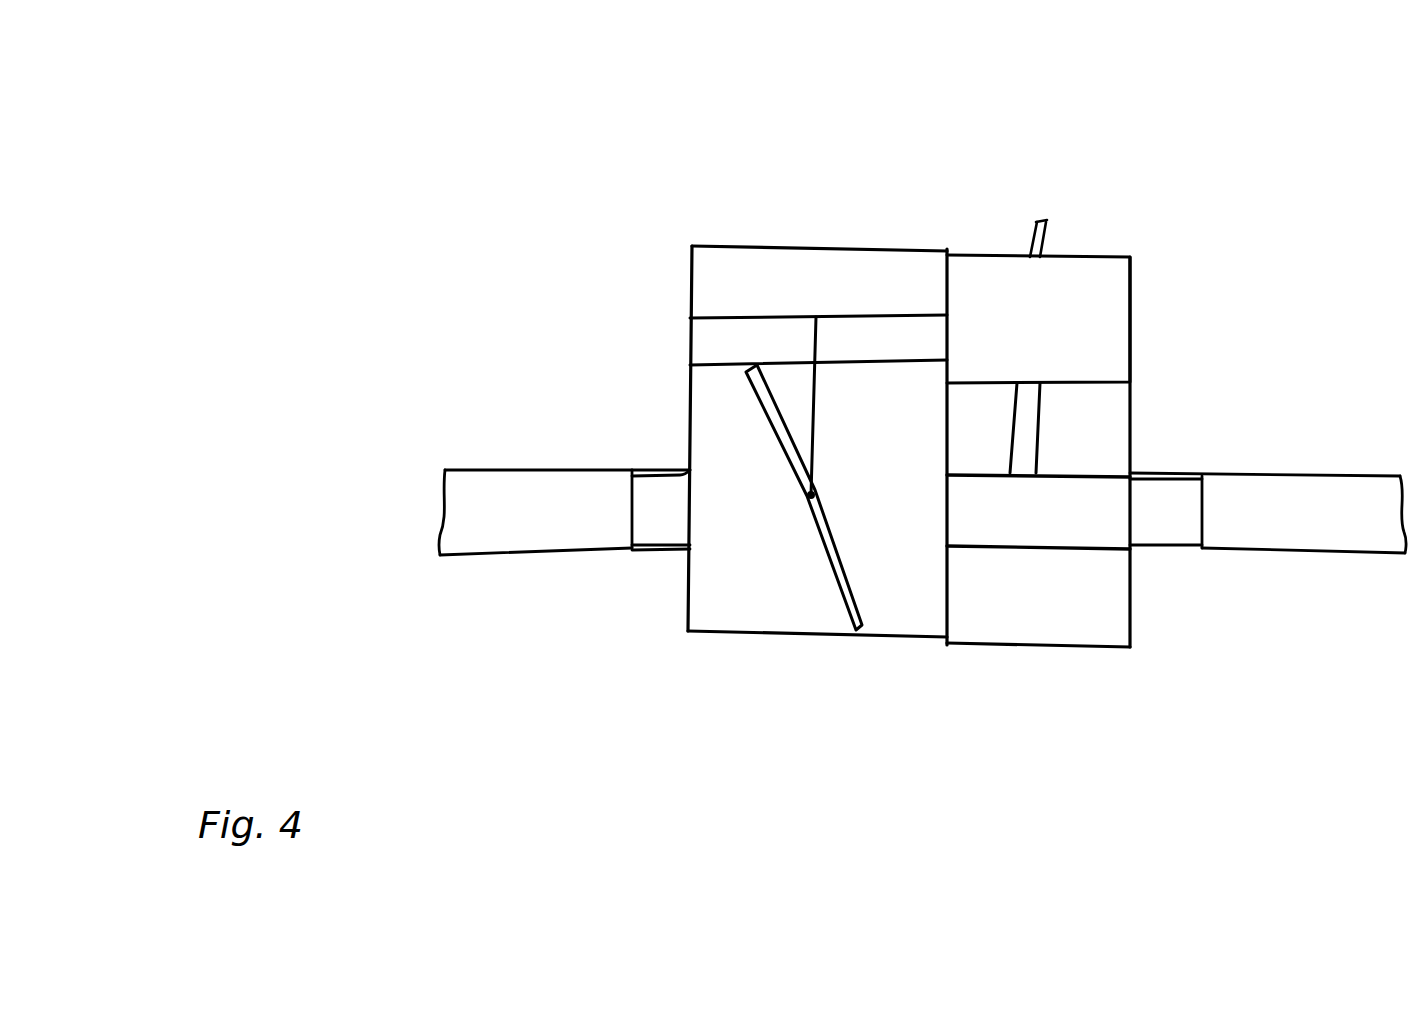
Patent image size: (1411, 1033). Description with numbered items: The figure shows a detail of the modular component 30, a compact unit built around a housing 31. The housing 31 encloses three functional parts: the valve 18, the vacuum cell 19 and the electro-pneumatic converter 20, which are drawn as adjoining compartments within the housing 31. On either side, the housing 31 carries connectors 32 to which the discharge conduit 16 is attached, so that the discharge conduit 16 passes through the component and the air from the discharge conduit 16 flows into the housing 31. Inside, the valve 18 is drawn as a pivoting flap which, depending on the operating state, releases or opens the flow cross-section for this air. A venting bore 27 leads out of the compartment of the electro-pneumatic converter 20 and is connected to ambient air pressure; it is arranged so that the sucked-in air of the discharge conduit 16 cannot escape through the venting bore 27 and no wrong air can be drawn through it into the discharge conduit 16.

The modular component 30 is at (702, 172).
The vacuum cell 19 is at (822, 272).
The valve 18 is at (843, 562).
The electro-pneumatic converter 20 is at (1058, 349).
The venting bore 27 is at (1047, 222).
The housing 31 is at (1130, 356).
The discharge conduit 16 is at (489, 496).
The connectors 32 is at (650, 546).